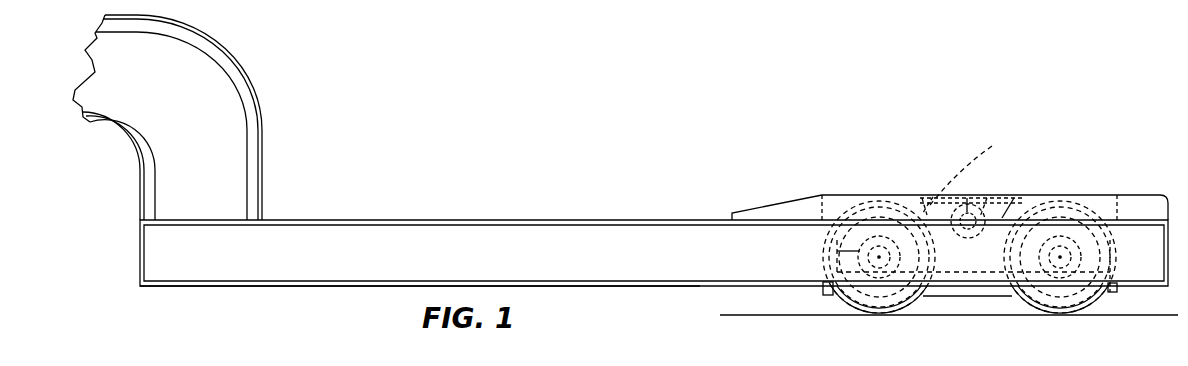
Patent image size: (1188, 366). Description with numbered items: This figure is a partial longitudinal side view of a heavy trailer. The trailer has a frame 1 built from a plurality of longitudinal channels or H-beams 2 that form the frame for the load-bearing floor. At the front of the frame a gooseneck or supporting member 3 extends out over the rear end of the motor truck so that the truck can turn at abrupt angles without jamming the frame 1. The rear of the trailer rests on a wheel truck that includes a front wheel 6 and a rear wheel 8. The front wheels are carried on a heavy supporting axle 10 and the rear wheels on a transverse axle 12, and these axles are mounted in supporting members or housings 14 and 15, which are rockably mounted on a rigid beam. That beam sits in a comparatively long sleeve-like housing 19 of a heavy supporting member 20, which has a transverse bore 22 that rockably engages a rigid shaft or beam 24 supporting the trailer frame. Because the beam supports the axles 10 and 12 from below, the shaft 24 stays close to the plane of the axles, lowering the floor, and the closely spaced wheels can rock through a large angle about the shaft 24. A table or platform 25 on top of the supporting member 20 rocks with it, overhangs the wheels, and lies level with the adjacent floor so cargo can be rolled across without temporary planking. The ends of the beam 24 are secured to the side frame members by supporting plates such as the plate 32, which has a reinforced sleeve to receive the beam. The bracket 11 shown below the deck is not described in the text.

The frame 1 is at (700, 281).
The longitudinal channels or H-beams 2 is at (292, 286).
The gooseneck or supporting member 3 is at (258, 123).
The front wheel 6 is at (890, 313).
The rear wheel 8 is at (1085, 310).
The supporting axle 10 is at (837, 236).
The bracket 11 is at (833, 297).
The transverse axle 12 is at (1076, 248).
The supporting member or housing 14 is at (828, 251).
The supporting member or housing 15 is at (1100, 258).
The sleeve-like housing 19 is at (977, 300).
The supporting member 20 is at (1022, 199).
The transverse bore 22 is at (1003, 190).
The rigid shaft or beam 24 is at (969, 198).
The table or platform 25 is at (992, 143).
The supporting plate 32 is at (939, 197).